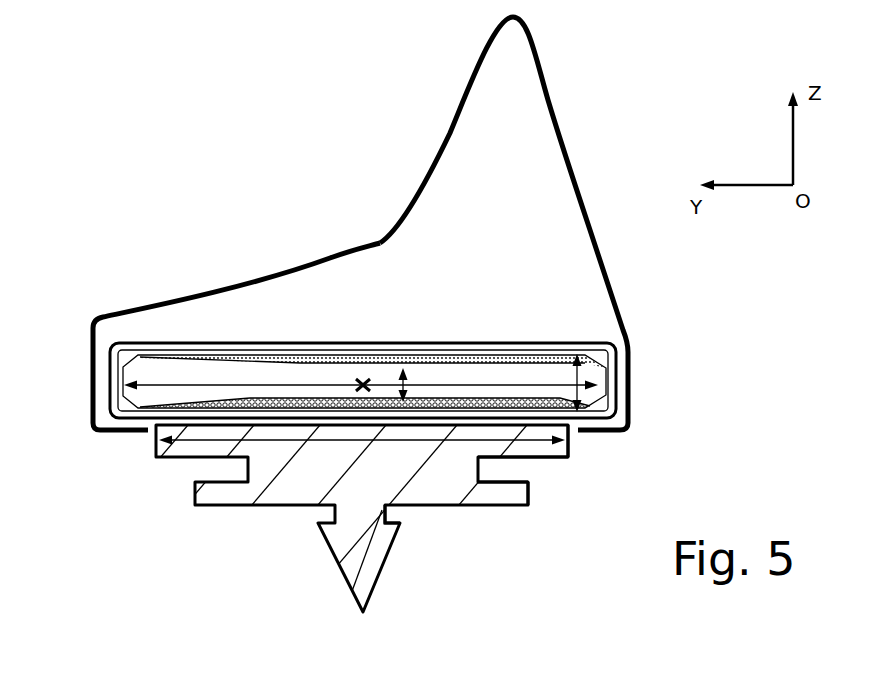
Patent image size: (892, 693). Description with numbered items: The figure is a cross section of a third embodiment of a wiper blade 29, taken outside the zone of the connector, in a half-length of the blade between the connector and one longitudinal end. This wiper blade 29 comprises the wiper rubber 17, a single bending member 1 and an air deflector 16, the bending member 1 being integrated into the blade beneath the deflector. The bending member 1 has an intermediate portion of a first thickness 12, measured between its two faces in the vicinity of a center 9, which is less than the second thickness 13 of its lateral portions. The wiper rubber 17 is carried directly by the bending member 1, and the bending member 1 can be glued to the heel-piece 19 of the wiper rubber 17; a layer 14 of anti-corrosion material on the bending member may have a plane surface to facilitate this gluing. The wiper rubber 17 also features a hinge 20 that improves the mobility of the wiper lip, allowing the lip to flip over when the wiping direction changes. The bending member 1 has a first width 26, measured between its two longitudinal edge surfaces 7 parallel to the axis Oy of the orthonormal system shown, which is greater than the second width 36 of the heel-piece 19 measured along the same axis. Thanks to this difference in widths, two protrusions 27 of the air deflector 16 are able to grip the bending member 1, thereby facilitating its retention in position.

The bending member 1 is at (496, 330).
The longitudinal edge surfaces 7 is at (112, 382).
The center 9 is at (363, 390).
The first thickness 12 is at (402, 368).
The second thickness 13 is at (613, 356).
The layer of anti-corrosion material 14 is at (528, 488).
The air deflector 16 is at (538, 167).
The wiper rubber 17 is at (184, 577).
The heel-piece 19 is at (556, 452).
The hinge 20 is at (410, 520).
The first width 26 is at (177, 386).
The protrusions 27 is at (120, 427).
The wiper blade 29 is at (279, 175).
The second width 36 is at (183, 440).